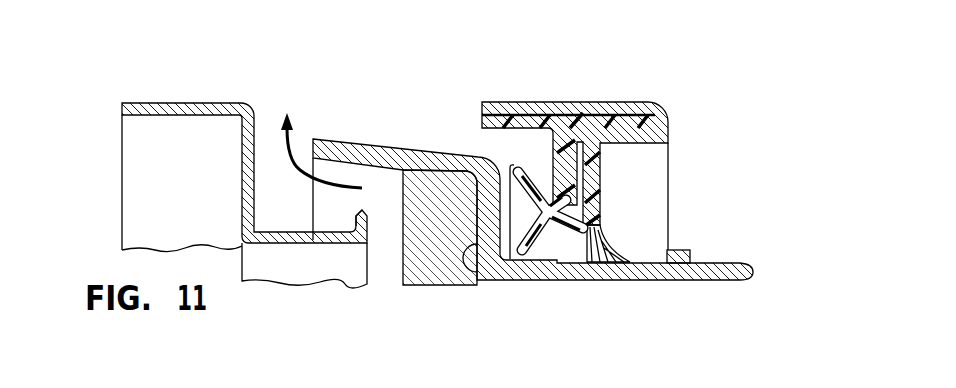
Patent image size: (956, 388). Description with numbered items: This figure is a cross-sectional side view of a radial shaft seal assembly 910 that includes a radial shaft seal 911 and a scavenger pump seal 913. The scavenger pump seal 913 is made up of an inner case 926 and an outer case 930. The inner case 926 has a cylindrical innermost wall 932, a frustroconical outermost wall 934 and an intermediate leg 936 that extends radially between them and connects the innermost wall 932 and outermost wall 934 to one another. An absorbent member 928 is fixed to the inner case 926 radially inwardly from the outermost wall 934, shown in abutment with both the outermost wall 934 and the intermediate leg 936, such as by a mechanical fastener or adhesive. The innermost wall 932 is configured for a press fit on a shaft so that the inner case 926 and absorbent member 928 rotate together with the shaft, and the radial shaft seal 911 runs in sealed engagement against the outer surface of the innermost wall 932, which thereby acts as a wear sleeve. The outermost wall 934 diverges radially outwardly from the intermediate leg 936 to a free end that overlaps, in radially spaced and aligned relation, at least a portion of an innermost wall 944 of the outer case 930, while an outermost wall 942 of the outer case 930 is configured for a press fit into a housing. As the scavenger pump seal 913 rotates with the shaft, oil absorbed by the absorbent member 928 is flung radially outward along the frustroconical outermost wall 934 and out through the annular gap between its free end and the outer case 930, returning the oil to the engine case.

The radial shaft seal assembly 910 is at (625, 145).
The radial shaft seal 911 is at (698, 145).
The scavenger pump seal 913 is at (316, 74).
The inner case 926 is at (653, 286).
The absorbent member 928 is at (473, 193).
The outer case 930 is at (241, 134).
The innermost wall 932 is at (713, 281).
The outermost wall 934 is at (544, 199).
The intermediate leg 936 is at (477, 273).
The outermost wall 942 is at (215, 100).
The innermost wall 944 is at (312, 243).